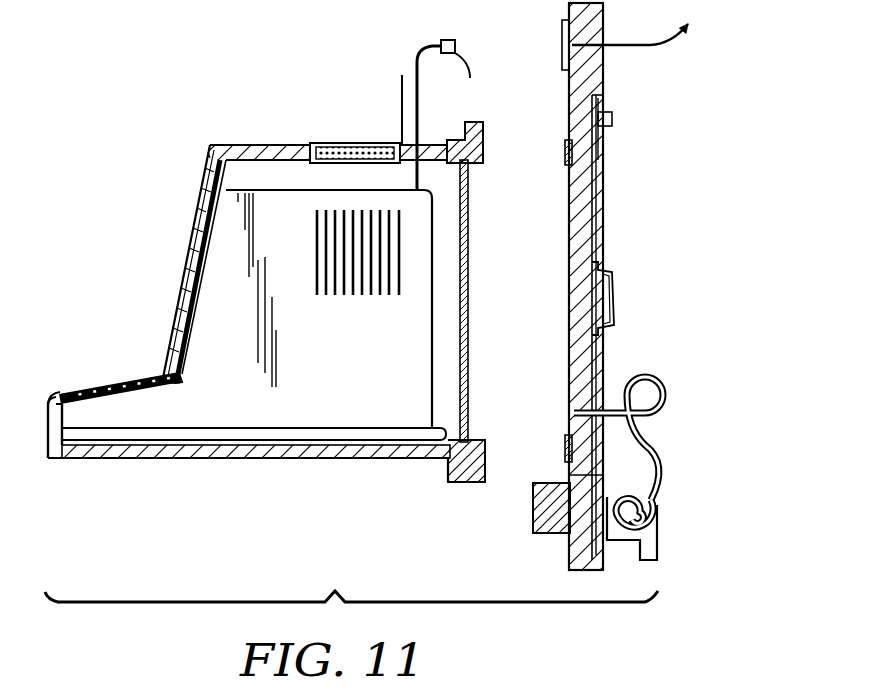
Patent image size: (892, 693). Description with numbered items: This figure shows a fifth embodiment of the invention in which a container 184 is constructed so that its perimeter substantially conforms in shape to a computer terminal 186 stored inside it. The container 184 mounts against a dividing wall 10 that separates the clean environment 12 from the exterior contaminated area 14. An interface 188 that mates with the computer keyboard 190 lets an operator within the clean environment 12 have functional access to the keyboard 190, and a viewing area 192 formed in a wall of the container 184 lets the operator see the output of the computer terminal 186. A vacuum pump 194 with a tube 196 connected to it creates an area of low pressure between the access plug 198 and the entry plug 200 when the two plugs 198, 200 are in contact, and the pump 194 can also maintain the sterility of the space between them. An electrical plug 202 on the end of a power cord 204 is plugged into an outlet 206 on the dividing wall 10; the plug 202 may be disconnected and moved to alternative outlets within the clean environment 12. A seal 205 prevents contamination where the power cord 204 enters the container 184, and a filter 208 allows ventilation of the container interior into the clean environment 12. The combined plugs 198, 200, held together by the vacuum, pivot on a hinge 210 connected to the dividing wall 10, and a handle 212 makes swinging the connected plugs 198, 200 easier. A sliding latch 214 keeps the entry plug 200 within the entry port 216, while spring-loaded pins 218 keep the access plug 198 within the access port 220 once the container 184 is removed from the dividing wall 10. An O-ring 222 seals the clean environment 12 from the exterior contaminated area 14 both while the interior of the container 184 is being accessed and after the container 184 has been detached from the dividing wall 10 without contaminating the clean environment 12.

The dividing wall 10 is at (605, 62).
The clean environment 12 is at (212, 41).
The exterior contaminated area 14 is at (747, 41).
The container 184 is at (145, 262).
The computer terminal 186 is at (379, 366).
The interface 188 is at (100, 380).
The computer keyboard 190 is at (147, 378).
The viewing area 192 is at (198, 219).
The vacuum pump 194 is at (658, 524).
The tube 196 is at (648, 432).
The access plug 198 is at (472, 251).
The entry plug 200 is at (605, 212).
The electrical plug 202 is at (469, 78).
The power cord 204 is at (414, 80).
The seal 205 is at (410, 146).
The outlet 206 is at (562, 27).
The filter 208 is at (332, 143).
The hinge 210 is at (612, 468).
The handle 212 is at (618, 287).
The sliding latch 214 is at (613, 120).
The entry port 216 is at (630, 182).
The spring-loaded pins 218 is at (470, 165).
The access port 220 is at (482, 294).
The O-ring 222 is at (567, 148).